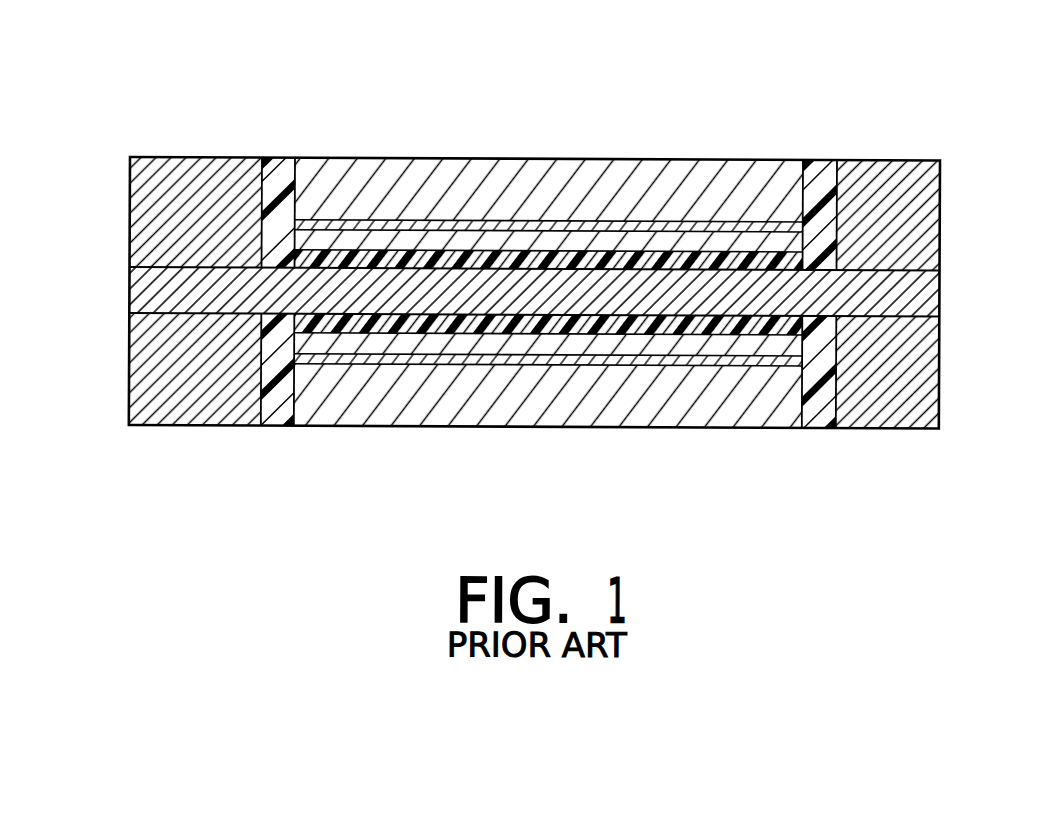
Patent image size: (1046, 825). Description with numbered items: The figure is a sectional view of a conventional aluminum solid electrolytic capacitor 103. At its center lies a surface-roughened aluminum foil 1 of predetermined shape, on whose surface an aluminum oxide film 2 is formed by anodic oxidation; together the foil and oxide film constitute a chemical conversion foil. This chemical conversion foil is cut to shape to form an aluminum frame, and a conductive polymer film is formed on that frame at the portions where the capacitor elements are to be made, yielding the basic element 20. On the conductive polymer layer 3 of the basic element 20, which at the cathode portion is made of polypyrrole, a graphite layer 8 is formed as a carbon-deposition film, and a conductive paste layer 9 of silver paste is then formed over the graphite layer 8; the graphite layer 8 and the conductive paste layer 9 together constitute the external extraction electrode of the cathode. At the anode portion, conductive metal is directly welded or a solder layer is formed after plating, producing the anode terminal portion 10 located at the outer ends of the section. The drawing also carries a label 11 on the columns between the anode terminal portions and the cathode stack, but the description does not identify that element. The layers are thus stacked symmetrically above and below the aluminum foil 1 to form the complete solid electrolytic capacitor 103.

The aluminum foil 1 is at (130, 291).
The aluminum oxide film 2 is at (351, 321).
The conductive polymer layer 3 is at (459, 344).
The graphite layer 8 is at (631, 358).
The conductive paste layer 9 is at (719, 398).
The anode terminal portion 10 is at (204, 182).
The via conductor 11 is at (278, 405).
The basic element 20 is at (677, 224).
The solid electrolytic capacitor 103 is at (542, 125).